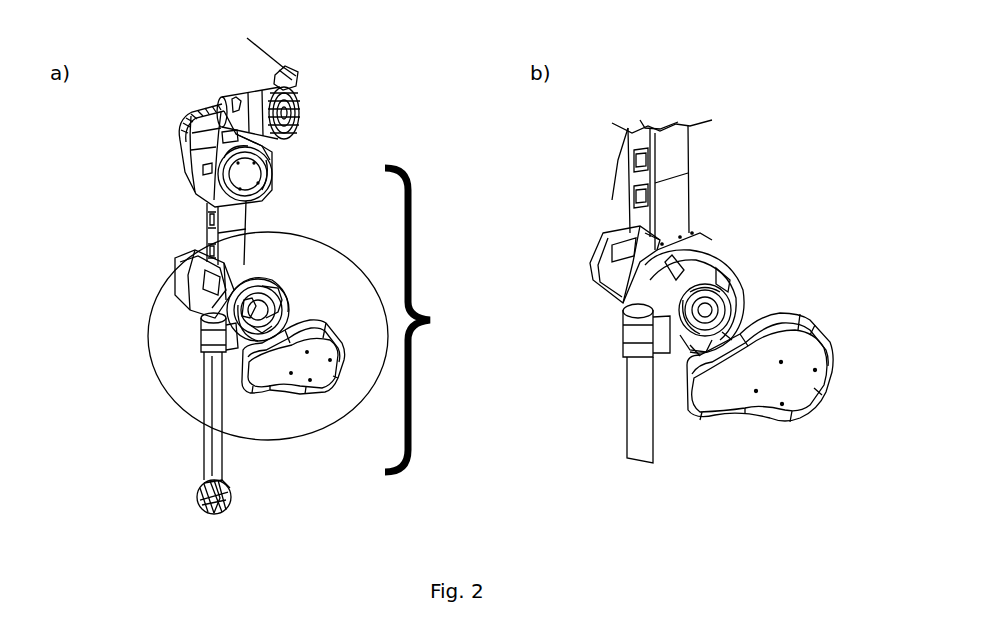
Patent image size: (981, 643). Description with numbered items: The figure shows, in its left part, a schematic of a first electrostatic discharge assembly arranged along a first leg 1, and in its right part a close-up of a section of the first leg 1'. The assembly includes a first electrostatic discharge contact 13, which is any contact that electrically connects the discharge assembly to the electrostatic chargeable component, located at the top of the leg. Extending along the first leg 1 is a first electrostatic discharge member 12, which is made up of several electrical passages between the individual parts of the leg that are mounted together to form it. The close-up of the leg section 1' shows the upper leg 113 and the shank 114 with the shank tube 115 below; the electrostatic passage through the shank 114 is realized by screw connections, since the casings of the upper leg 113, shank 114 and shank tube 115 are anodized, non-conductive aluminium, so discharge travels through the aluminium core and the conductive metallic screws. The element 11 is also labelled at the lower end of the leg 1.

In FIG. 2a, the first leg 1 is at (181, 292).
In FIG. 2a, the section of the first leg 1' is at (169, 301).
In FIG. 2b, the section of the first leg 1' is at (713, 217).
In FIG. 2a, the ball end of tool rod 11 is at (150, 474).
In FIG. 2a, the first electrostatic discharge member 12 is at (309, 320).
In FIG. 2a, the first electrostatic discharge contact 13 is at (281, 71).
In FIG. 2b, the upper leg 113 is at (740, 185).
In FIG. 2b, the shank 114 is at (789, 298).
In FIG. 2b, the shank tube 115 is at (759, 412).